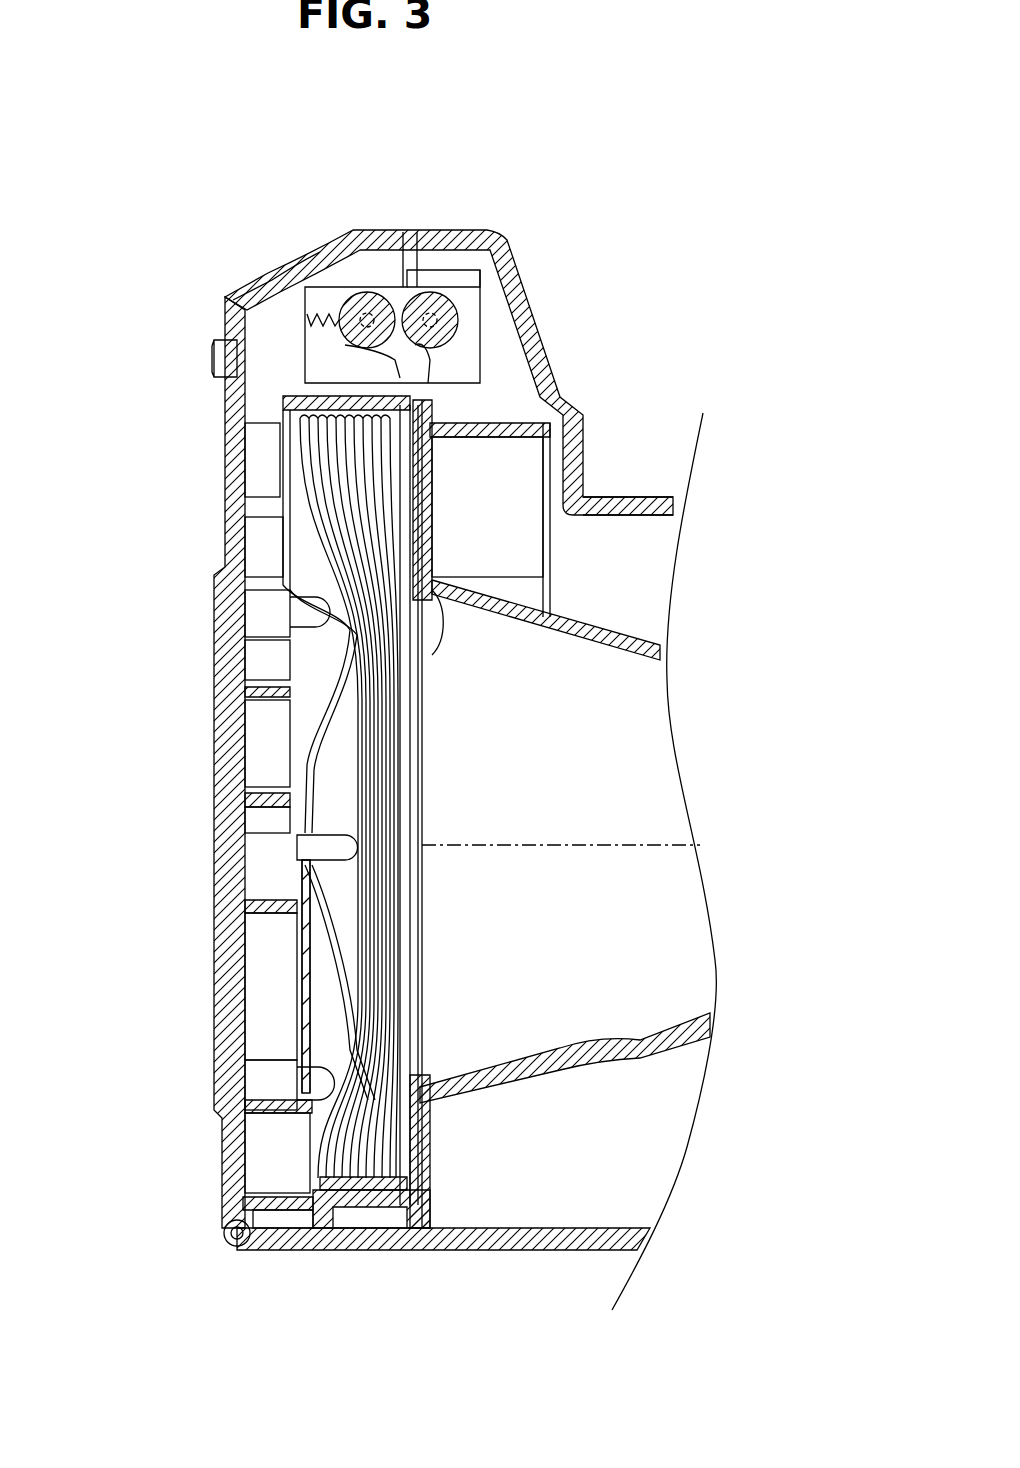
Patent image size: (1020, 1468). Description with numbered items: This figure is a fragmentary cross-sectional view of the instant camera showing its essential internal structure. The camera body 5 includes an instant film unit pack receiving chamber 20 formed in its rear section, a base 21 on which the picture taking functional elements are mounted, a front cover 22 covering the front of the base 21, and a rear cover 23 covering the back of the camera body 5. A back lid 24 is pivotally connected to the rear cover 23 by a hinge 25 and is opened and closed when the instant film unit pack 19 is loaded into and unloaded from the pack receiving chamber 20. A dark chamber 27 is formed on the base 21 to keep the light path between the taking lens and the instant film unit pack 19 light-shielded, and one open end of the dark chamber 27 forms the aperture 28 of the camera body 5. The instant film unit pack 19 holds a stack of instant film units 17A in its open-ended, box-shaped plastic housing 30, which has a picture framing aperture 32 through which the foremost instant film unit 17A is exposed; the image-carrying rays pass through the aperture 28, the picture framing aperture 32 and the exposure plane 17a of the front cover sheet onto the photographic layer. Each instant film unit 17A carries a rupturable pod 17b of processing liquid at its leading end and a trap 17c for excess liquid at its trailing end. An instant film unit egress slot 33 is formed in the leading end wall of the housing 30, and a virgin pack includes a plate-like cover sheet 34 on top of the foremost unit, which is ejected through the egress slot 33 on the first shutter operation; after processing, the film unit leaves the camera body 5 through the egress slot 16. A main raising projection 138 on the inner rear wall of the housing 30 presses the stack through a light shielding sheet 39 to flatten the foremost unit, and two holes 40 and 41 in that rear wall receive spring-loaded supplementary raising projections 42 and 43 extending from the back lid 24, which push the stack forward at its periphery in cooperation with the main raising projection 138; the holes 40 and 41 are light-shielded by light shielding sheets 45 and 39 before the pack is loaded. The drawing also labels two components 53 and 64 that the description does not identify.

The camera body 5 is at (513, 228).
The instant film unit egress slot 16 is at (420, 240).
The instant film unit 17A is at (340, 765).
The exposure plane 17a is at (400, 887).
The rupturable pod 17b is at (390, 513).
The trap 17c is at (388, 1143).
The instant film unit pack 19 is at (280, 742).
The instant film unit pack receiving chamber 20 is at (265, 972).
The base 21 is at (495, 405).
The front cover 22 is at (605, 490).
The rear cover 23 is at (252, 278).
The back lid 24 is at (218, 477).
The hinge 25 is at (228, 1243).
The dark chamber 27 is at (612, 640).
The aperture 28 is at (434, 610).
The instant film unit pack housing 30 is at (282, 837).
The picture framing aperture 32 is at (410, 1080).
The instant film unit egress slot 33 is at (398, 440).
The plate-like cover sheet 34 is at (402, 772).
The light shielding sheet 39 is at (353, 988).
The hole 40 is at (262, 553).
The hole 41 is at (310, 1118).
The supplementary instant film unit raising projection 42 is at (262, 617).
The supplementary instant film unit raising projection 43 is at (265, 1087).
The light shielding sheet 45 is at (262, 670).
The roller 53 is at (465, 308).
The roller 64 is at (412, 355).
The main raising projection 138 is at (330, 868).